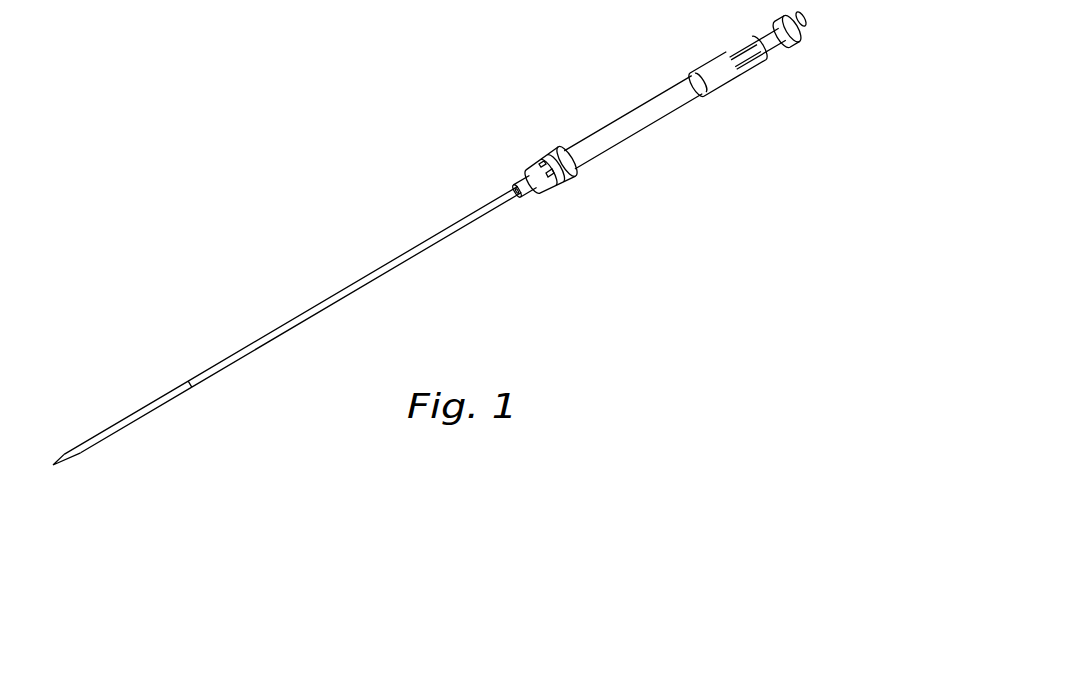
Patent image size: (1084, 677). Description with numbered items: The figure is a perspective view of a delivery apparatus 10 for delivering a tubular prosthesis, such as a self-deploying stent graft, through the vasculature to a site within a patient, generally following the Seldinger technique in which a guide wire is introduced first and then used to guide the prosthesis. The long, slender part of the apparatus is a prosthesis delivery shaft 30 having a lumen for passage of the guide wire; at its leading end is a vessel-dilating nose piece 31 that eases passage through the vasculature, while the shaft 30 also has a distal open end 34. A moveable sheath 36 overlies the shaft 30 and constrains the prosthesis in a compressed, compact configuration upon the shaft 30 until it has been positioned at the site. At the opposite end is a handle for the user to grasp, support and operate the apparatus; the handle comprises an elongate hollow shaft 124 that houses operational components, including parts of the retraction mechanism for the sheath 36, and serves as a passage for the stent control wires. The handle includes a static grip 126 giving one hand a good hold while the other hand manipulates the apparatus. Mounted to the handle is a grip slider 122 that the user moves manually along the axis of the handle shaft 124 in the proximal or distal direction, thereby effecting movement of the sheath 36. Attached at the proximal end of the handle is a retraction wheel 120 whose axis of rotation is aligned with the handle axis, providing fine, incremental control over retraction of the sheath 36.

The delivery apparatus 10 is at (441, 183).
The prosthesis delivery shaft 30 is at (152, 398).
The vessel-dilating nose piece 31 is at (55, 464).
The distal open end 34 is at (516, 180).
The moveable sheath 36 is at (320, 304).
The retraction wheel 120 is at (541, 199).
The grip slider 122 is at (577, 175).
The elongate hollow shaft 124 is at (603, 133).
The static grip 126 is at (738, 62).